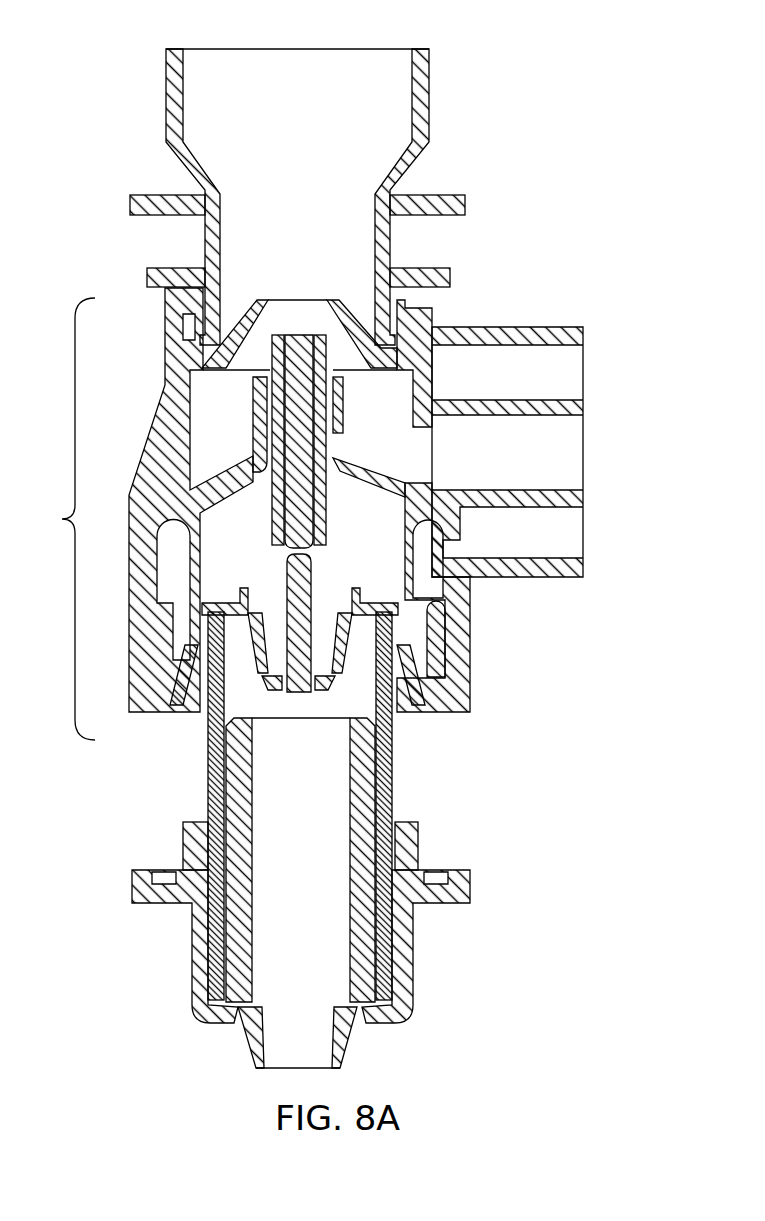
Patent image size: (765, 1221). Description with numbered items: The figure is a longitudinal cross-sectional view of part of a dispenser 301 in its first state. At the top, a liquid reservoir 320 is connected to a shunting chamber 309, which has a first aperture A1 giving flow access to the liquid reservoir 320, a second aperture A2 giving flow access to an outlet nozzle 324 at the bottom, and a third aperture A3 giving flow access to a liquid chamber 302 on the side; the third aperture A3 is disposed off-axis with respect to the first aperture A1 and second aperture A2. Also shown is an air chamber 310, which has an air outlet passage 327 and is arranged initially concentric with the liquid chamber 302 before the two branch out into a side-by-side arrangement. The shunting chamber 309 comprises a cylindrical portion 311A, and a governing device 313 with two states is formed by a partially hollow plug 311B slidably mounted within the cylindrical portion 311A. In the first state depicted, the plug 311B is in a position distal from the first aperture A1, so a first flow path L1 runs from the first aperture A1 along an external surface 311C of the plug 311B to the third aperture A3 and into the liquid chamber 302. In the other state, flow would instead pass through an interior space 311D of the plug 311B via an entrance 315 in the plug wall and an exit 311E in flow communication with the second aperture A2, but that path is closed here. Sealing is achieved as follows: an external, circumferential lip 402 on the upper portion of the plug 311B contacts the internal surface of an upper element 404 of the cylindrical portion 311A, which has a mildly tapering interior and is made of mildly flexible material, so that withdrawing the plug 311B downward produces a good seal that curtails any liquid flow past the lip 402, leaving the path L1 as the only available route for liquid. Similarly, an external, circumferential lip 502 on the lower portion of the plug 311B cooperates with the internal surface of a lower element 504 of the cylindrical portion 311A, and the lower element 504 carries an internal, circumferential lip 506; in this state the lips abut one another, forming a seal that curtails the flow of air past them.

The dispenser 301 is at (566, 147).
The liquid chamber 302 is at (572, 448).
The shunting chamber 309 is at (62, 519).
The air chamber 310 is at (572, 367).
The cylindrical portion 311A is at (222, 485).
The hollow plug 311B is at (277, 523).
The external surface of the plug 311C is at (387, 417).
The interior space of the plug 311D is at (266, 630).
The exit 311E is at (313, 660).
The governing device 313 is at (277, 358).
The entrance 315 is at (340, 627).
The liquid reservoir 320 is at (391, 63).
The outlet nozzle 324 is at (337, 792).
The air outlet passage 327 is at (468, 552).
The external circumferential lip 402 is at (323, 438).
The upper element 404 is at (253, 400).
The external circumferential lip 502 is at (383, 605).
The lower element 504 is at (400, 618).
The internal circumferential lip 506 is at (180, 690).
The first aperture A1 is at (260, 253).
The second aperture A2 is at (266, 480).
The third aperture A3 is at (420, 456).
The first flow path L1 is at (372, 380).